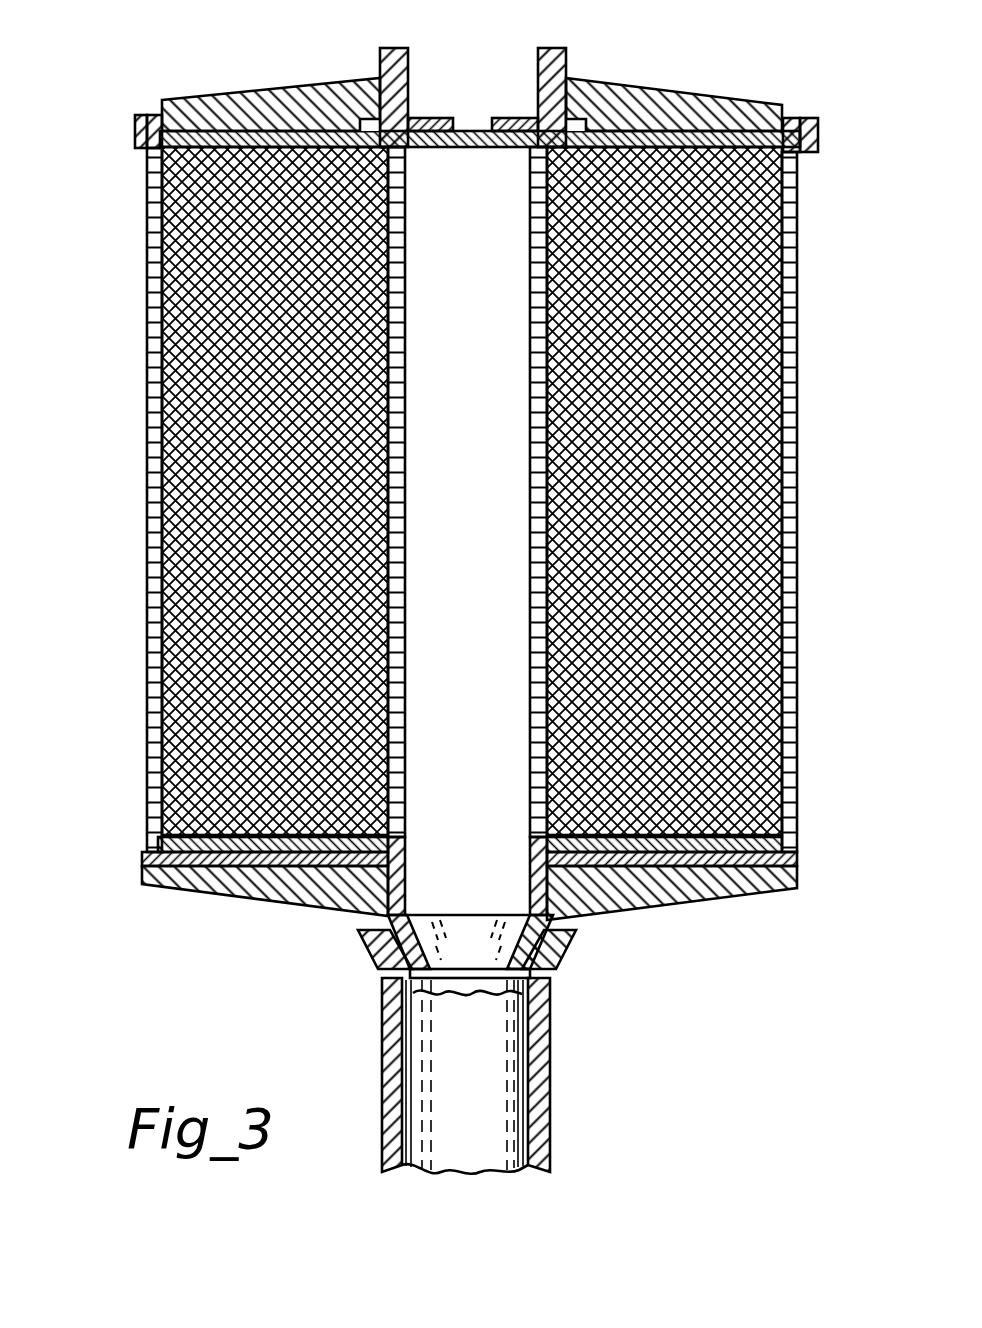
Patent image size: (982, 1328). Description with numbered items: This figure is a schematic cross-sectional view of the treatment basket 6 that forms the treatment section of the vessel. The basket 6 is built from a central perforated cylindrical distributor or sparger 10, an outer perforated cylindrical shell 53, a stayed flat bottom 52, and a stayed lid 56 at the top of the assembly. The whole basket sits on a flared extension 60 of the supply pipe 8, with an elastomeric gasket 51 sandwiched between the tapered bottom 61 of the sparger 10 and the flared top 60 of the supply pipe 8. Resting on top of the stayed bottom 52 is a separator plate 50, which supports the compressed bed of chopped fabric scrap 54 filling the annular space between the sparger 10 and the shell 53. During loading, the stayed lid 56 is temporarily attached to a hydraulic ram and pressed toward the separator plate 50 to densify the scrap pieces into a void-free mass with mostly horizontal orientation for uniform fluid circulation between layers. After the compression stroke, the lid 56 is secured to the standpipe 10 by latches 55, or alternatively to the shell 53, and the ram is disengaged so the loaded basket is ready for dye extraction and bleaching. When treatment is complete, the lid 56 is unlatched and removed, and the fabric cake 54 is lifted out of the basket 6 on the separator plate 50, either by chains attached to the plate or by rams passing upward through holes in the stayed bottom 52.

The treatment basket 6 is at (116, 222).
The supply pipe 8 is at (483, 1117).
The perforated cylindrical distributor or sparger 10 is at (488, 357).
The separator plate 50 is at (586, 832).
The elastomeric gasket 51 is at (467, 1010).
The stayed flat bottom 52 is at (552, 864).
The perforated cylindrical shell 53 is at (799, 366).
The compressed bed of chopped fabric scrap 54 is at (574, 571).
The latches 55 is at (499, 119).
The stayed lid 56 is at (675, 132).
The flared extension 60 is at (362, 948).
The tapered bottom 61 is at (478, 962).